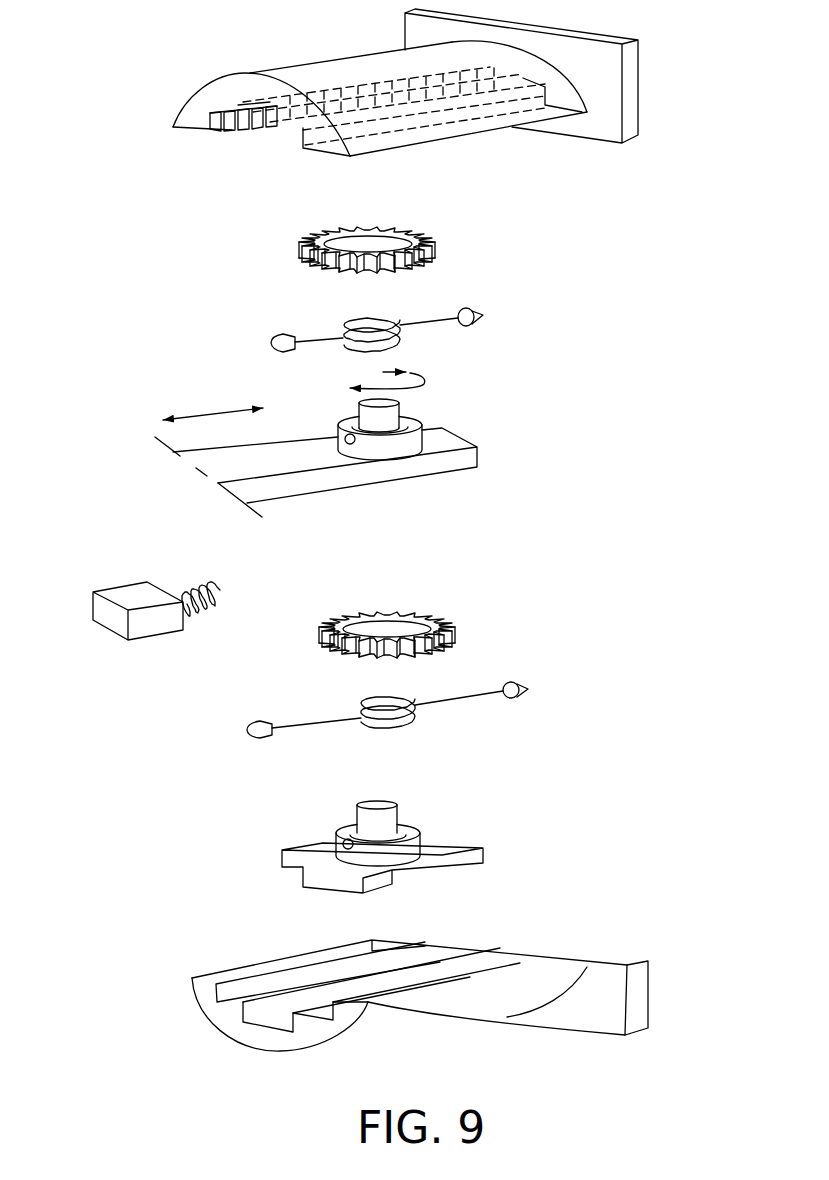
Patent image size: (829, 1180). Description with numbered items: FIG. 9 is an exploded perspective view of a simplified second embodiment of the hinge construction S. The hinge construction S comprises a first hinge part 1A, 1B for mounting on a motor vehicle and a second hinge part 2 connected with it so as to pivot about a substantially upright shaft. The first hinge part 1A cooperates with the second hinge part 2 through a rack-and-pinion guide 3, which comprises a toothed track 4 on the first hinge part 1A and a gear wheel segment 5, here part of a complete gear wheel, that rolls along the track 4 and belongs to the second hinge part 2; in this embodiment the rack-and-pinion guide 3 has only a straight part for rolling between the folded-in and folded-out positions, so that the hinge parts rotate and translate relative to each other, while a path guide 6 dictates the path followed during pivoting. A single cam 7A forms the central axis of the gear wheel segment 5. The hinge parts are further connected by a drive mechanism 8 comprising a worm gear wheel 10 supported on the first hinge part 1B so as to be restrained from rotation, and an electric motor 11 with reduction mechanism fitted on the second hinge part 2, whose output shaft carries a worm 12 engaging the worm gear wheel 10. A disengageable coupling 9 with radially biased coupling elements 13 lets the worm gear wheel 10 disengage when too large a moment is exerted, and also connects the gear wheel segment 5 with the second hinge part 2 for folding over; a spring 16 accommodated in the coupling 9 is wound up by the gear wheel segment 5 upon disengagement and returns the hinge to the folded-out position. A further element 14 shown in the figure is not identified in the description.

The first hinge part 1A is at (648, 135).
The first hinge part 1B is at (657, 1015).
The hinge construction S is at (652, 63).
The second hinge part 2 is at (487, 472).
The rack-and-pinion guide 3 is at (230, 137).
The toothed track 4 is at (249, 132).
The gear wheel segment 5 is at (413, 243).
The path guide 6 is at (375, 418).
The cam 7A is at (401, 414).
The drive mechanism 8 is at (105, 635).
The disengageable coupling 9 is at (417, 305).
The worm gear wheel 10 is at (433, 635).
The electric motor 11 is at (153, 620).
The worm 12 is at (210, 610).
The coupling elements 13 is at (523, 693).
The slide block 14 is at (333, 872).
The spring 16 is at (350, 330).